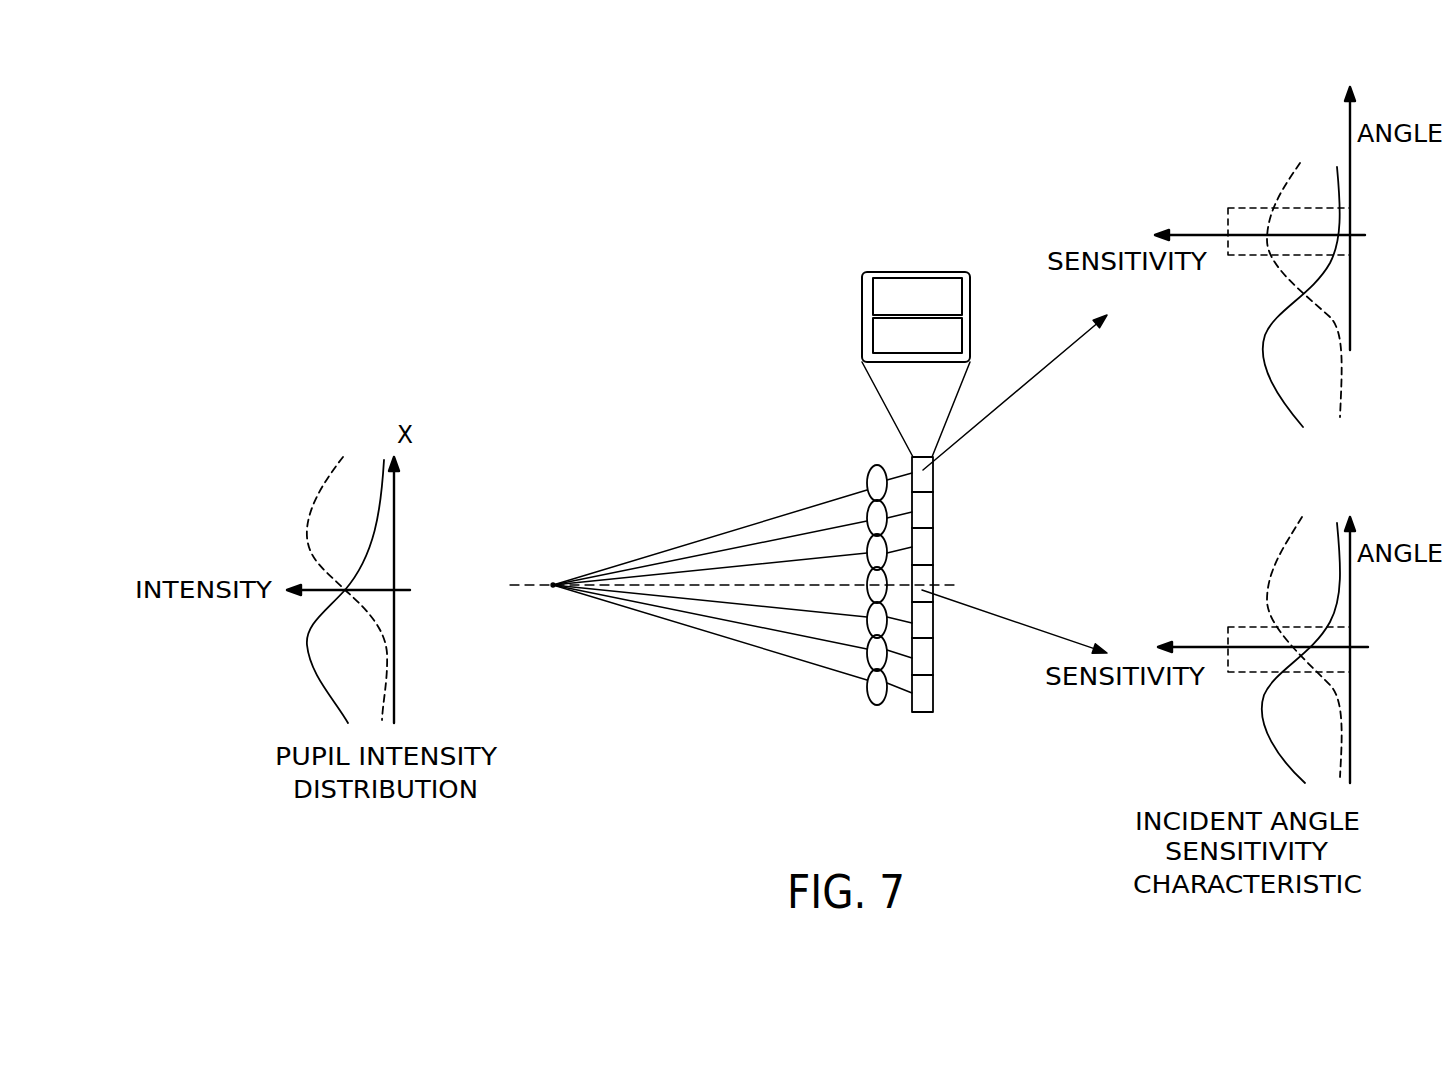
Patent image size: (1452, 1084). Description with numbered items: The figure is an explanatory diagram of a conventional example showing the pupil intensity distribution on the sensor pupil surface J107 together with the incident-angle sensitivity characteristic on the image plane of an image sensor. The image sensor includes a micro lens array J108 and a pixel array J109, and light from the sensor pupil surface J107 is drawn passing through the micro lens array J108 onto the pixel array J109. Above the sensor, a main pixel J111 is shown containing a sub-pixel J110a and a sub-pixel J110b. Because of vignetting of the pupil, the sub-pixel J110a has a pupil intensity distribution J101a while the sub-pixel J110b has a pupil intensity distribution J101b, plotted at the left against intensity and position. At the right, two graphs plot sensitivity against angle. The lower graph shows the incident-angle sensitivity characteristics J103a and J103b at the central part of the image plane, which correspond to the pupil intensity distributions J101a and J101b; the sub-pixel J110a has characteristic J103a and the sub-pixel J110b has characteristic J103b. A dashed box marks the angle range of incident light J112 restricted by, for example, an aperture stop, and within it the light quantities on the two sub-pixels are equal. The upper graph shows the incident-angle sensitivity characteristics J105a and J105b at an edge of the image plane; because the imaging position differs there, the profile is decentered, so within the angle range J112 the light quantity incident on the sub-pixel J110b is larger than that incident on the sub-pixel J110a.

The pupil intensity distribution J101a is at (318, 688).
The pupil intensity distribution J101b is at (310, 510).
The incident-angle sensitivity characteristic J103a is at (1273, 748).
The incident-angle sensitivity characteristic J103b is at (1268, 572).
The incident-angle sensitivity characteristic J105a is at (1273, 390).
The incident-angle sensitivity characteristic J105b is at (1293, 177).
The sensor pupil surface J107 is at (545, 590).
The micro lens array J108 is at (867, 700).
The pixel array J109 is at (920, 712).
The sub-pixel J110a is at (888, 287).
The sub-pixel J110b is at (888, 345).
The main pixel J111 is at (922, 270).
The angle range of incident light J112 is at (1228, 217).